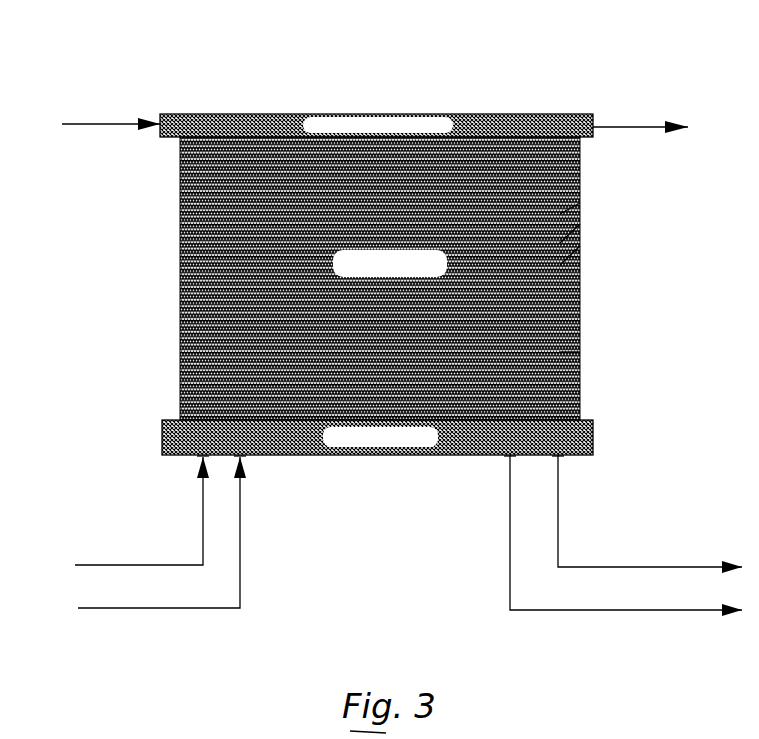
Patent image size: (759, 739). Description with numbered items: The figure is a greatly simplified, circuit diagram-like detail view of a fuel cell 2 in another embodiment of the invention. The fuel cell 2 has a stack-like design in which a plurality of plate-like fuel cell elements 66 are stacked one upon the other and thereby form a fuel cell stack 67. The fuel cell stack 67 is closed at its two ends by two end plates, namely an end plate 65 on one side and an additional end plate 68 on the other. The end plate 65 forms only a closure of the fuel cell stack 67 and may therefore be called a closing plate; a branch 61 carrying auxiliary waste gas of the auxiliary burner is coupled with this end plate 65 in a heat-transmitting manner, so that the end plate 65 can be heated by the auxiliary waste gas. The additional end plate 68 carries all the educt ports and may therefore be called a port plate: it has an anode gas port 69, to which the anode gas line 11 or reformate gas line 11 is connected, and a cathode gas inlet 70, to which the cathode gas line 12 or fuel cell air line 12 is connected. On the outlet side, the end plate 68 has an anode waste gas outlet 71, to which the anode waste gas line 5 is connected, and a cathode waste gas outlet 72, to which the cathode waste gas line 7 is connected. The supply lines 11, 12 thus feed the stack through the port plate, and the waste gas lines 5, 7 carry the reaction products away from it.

The fuel cell 2 is at (582, 295).
The anode waste gas line 5 is at (640, 565).
The cathode waste gas line 7 is at (573, 612).
The anode gas line 11 is at (105, 567).
The cathode gas line 12 is at (138, 610).
The branch 61 is at (95, 124).
The end plate 65 is at (503, 120).
The fuel cell elements 66 is at (560, 265).
The fuel cell stack 67 is at (582, 352).
The end plate 68 is at (428, 442).
The anode gas port 69 is at (200, 458).
The cathode gas inlet 70 is at (242, 458).
The anode waste gas outlet 71 is at (560, 458).
The cathode waste gas outlet 72 is at (508, 457).